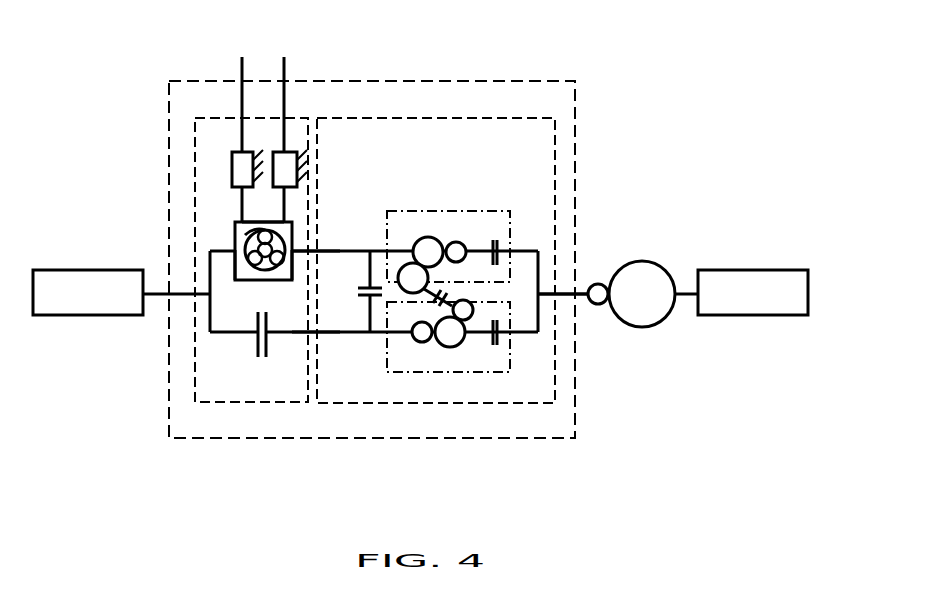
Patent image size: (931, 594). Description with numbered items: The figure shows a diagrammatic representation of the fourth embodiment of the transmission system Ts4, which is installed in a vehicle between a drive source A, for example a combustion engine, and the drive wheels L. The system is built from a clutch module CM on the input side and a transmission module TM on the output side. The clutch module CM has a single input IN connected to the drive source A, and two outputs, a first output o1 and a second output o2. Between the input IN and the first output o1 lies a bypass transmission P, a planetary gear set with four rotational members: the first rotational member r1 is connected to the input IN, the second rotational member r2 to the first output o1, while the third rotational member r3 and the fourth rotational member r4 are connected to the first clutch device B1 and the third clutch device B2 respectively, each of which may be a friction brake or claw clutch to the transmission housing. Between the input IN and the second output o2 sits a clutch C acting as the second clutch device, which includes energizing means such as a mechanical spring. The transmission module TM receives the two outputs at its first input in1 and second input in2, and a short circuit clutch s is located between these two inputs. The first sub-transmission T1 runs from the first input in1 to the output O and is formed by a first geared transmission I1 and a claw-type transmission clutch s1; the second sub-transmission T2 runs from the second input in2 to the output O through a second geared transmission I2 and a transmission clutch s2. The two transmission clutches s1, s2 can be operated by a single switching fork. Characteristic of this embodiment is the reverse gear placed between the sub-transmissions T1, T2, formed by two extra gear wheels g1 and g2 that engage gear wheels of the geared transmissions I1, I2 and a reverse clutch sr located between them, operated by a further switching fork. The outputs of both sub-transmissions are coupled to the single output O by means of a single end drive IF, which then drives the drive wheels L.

The transmission system Ts4 is at (168, 80).
The clutch module CM is at (215, 118).
The transmission module TM is at (500, 118).
The first clutch device B1 is at (247, 130).
The third clutch device B2 is at (290, 130).
The bypass transmission P is at (242, 240).
The first rotational member r1 is at (236, 256).
The second rotational member r2 is at (312, 252).
The third rotational member r3 is at (246, 240).
The fourth rotational member r4 is at (283, 219).
The first output o1 is at (312, 252).
The second output o2 is at (305, 333).
The first input in1 is at (318, 247).
The second input in2 is at (317, 333).
The short circuit clutch s is at (356, 294).
The first sub-transmission T1 is at (503, 210).
The second sub-transmission T2 is at (507, 372).
The first geared transmission I1 is at (445, 240).
The second geared transmission I2 is at (433, 347).
The extra gear wheel g1 is at (402, 263).
The extra gear wheel g2 is at (468, 310).
The reverse clutch sr is at (436, 301).
The transmission clutch s1 is at (495, 240).
The transmission clutch s2 is at (495, 345).
The clutch C is at (262, 357).
The drive source A is at (88, 295).
The input IN is at (195, 295).
The output O is at (553, 293).
The end drive IF is at (609, 282).
The drive wheels L is at (756, 298).